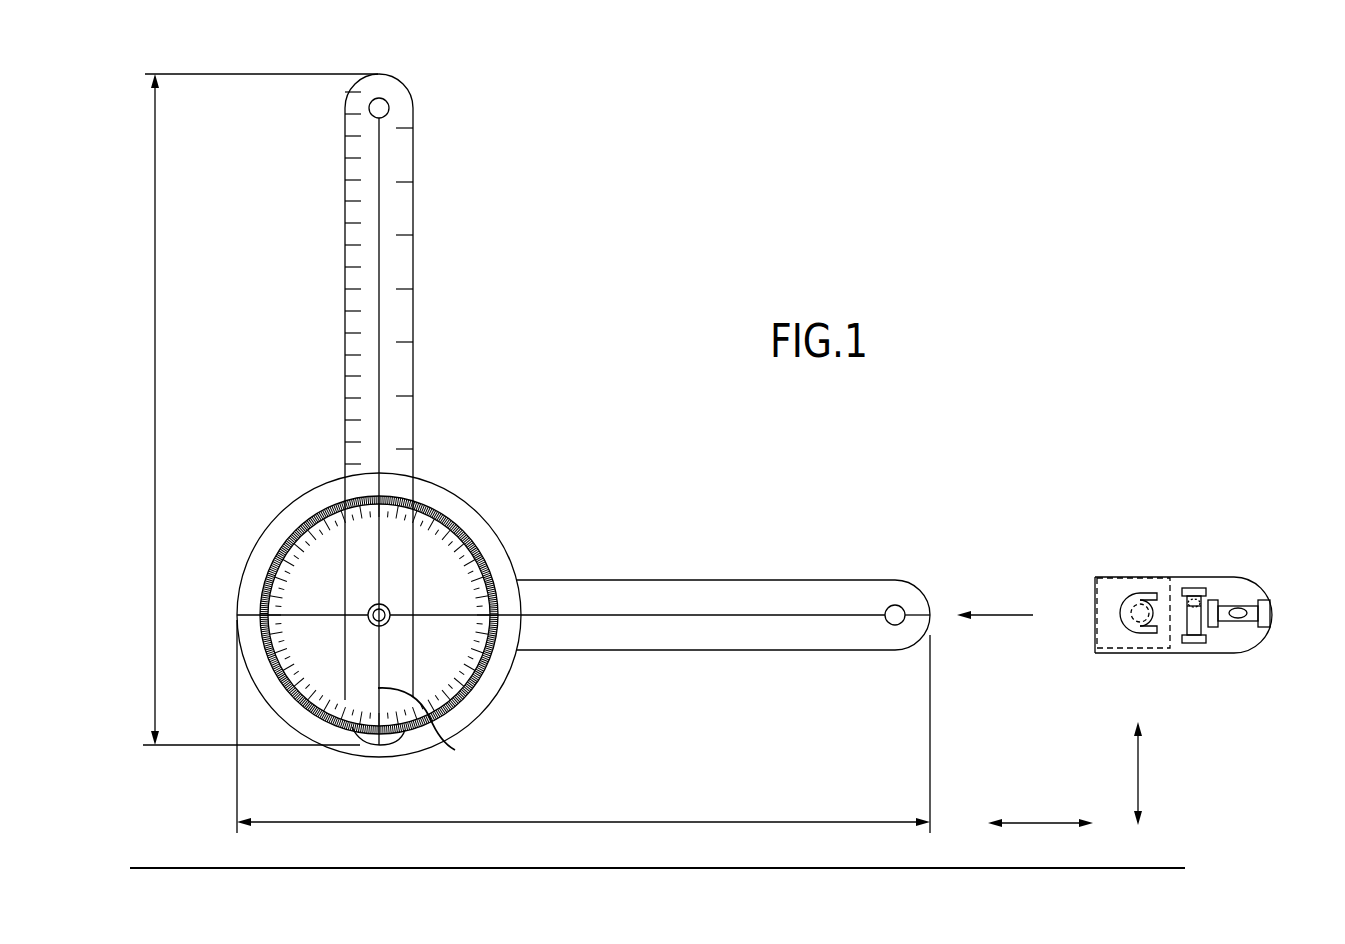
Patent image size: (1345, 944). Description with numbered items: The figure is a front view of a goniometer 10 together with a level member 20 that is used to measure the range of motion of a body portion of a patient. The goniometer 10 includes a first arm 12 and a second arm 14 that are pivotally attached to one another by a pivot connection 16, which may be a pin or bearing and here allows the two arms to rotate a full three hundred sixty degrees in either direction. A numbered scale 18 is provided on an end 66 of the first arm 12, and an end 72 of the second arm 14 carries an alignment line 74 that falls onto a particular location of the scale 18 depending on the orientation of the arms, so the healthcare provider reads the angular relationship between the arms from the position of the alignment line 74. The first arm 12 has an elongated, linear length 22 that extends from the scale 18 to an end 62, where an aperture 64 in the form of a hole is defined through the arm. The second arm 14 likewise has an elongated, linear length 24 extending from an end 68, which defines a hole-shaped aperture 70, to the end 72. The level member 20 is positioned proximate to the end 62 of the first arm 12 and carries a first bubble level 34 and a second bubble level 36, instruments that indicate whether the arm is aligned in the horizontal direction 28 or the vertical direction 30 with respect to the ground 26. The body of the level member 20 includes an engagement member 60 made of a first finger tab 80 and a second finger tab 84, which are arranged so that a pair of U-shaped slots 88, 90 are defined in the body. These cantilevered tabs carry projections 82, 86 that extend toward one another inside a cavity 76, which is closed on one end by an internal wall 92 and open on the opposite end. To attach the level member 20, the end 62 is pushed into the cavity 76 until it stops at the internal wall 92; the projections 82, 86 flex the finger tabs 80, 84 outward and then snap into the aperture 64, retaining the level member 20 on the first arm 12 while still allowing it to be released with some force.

The goniometer 10 is at (562, 382).
The first arm 12 is at (710, 580).
The second arm 14 is at (413, 318).
The pivot connection 16 is at (388, 607).
The scale 18 is at (270, 533).
The level member 20 is at (1248, 560).
The length 22 is at (640, 822).
The length 24 is at (150, 372).
The ground 26 is at (172, 868).
The horizontal direction 28 is at (1043, 823).
The vertical direction 30 is at (1140, 775).
The first bubble level 34 is at (1243, 624).
The second bubble level 36 is at (1193, 632).
The engagement member 60 is at (1105, 593).
The end 62 is at (920, 582).
The aperture 64 is at (893, 626).
The end 66 is at (238, 598).
The end 68 is at (400, 74).
The aperture 70 is at (368, 104).
The end 72 is at (393, 742).
The alignment line 74 is at (455, 750).
The cavity 76 is at (1085, 604).
The first finger tab 80 is at (1125, 630).
The projection 82 is at (1153, 608).
The second finger tab 84 is at (1148, 629).
The projection 86 is at (1140, 613).
The U-shaped slot 88 is at (1136, 596).
The U-shaped slot 90 is at (1148, 596).
The internal wall 92 is at (1168, 642).